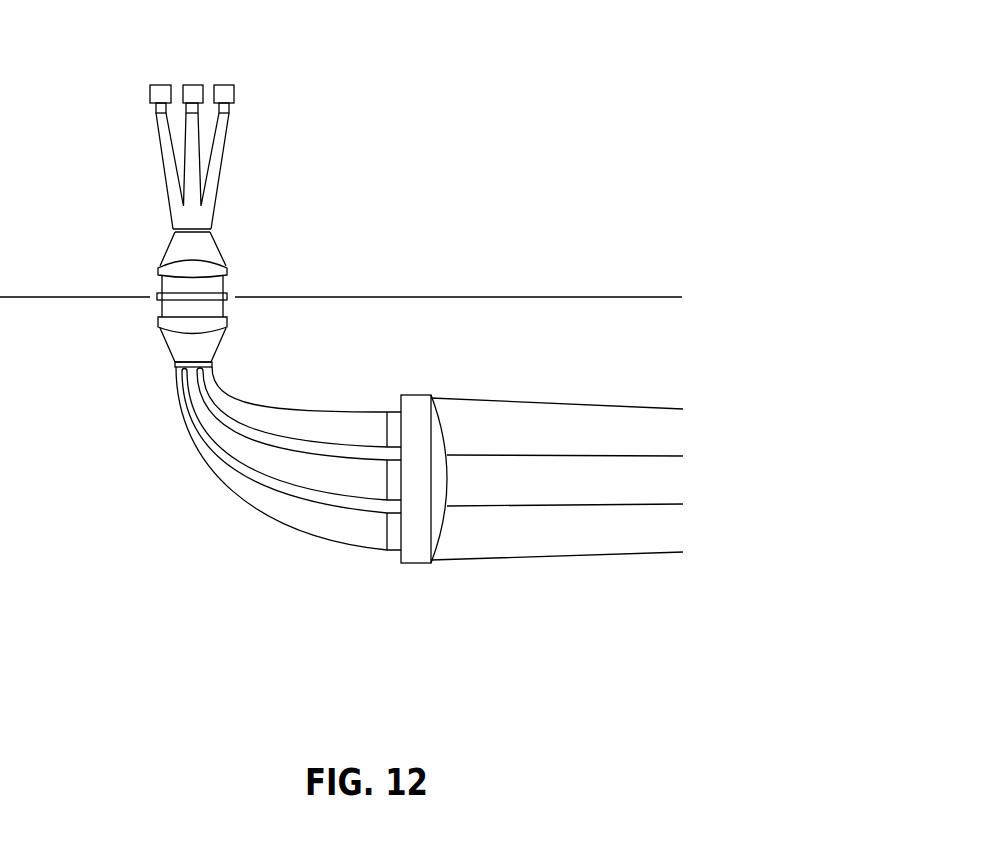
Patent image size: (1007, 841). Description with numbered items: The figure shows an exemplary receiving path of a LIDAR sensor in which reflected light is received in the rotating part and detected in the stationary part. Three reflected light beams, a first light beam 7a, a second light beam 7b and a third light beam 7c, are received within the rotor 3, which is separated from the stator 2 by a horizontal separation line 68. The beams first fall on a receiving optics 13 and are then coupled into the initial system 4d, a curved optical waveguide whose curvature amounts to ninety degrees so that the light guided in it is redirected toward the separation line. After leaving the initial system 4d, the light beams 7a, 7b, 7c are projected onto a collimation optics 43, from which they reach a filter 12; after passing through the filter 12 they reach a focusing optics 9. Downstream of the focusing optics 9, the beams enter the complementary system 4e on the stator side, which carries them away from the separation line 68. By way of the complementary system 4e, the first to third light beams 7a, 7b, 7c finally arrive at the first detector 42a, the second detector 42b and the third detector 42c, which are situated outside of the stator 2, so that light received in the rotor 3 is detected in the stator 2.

The stator 2 is at (44, 252).
The rotor 3 is at (44, 366).
The initial system 4d is at (173, 370).
The complementary system 4e is at (172, 222).
The first light beam 7a is at (156, 109).
The second light beam 7b is at (198, 108).
The third light beam 7c is at (230, 109).
The focusing optics 9 is at (228, 270).
The filter 12 is at (225, 292).
The receiving optics 13 is at (416, 550).
The first detector 42a is at (153, 84).
The second detector 42b is at (193, 84).
The third detector 42c is at (233, 84).
The collimation optics 43 is at (228, 320).
The separation line 68 is at (621, 296).